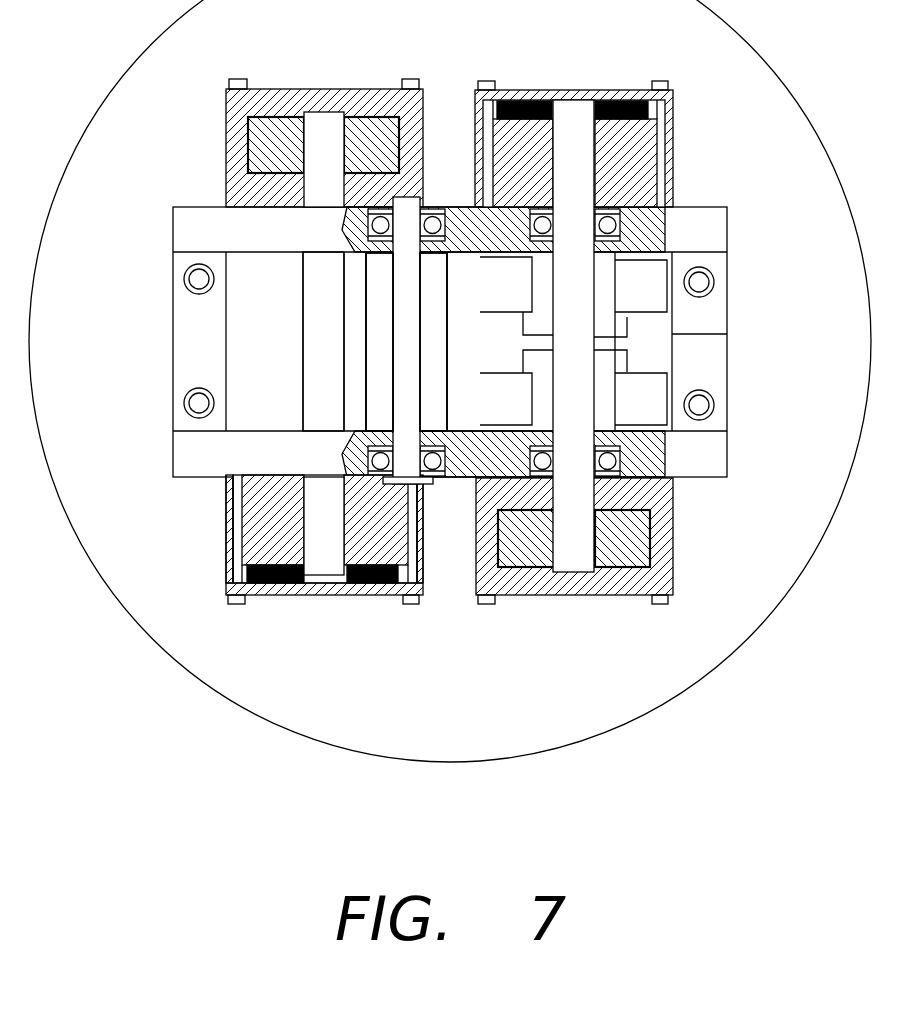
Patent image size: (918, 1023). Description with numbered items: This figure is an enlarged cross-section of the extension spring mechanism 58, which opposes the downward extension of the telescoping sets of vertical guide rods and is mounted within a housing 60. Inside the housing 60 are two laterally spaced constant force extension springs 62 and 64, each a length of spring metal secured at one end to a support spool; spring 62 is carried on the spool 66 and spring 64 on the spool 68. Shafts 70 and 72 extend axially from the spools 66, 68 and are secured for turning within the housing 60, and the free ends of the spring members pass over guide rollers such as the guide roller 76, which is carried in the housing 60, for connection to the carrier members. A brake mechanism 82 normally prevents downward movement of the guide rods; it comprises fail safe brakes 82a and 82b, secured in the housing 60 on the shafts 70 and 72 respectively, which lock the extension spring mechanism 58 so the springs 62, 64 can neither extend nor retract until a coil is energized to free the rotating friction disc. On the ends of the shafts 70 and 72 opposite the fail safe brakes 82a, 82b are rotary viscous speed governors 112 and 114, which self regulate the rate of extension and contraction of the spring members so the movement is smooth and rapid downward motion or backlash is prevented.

The extension spring mechanism 58 is at (750, 382).
The housing 60 is at (792, 122).
The constant force extension spring 62 is at (645, 350).
The constant force extension spring 64 is at (257, 348).
The spool 66 is at (604, 295).
The spool 68 is at (257, 272).
The shaft 70 is at (578, 115).
The shaft 72 is at (332, 122).
The guide roller 76 is at (443, 303).
The brake mechanism 82 is at (340, 614).
The fail safe brake 82a is at (650, 147).
The fail safe brake 82b is at (248, 540).
The rotary viscous speed governor 112 is at (645, 538).
The rotary viscous speed governor 114 is at (258, 138).